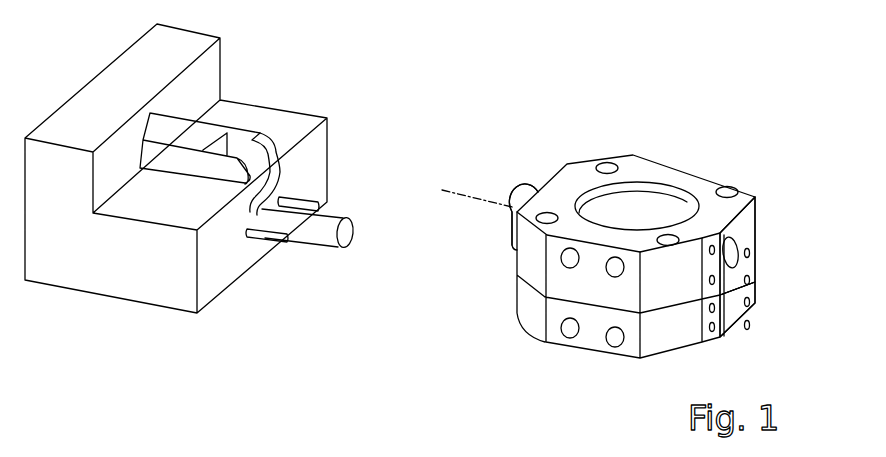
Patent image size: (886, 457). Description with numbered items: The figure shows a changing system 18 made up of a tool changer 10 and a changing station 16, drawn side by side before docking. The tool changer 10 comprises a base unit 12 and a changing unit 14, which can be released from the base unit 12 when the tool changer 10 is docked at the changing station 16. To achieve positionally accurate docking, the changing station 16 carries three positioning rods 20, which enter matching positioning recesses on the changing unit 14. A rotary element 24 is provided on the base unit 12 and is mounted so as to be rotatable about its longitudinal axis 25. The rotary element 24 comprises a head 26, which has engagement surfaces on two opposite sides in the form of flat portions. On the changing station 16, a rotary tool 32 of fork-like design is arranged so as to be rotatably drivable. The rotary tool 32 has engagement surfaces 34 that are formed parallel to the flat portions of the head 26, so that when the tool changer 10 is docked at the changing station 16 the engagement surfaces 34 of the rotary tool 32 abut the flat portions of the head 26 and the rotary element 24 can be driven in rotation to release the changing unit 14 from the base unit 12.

The tool changer 10 is at (589, 362).
The base unit 12 is at (757, 222).
The changing unit 14 is at (757, 283).
The changing station 16 is at (101, 314).
The changing system 18 is at (783, 125).
The positioning rods 20 is at (308, 202).
The rotary element 24 is at (531, 188).
The longitudinal axis 25 is at (453, 192).
The head 26 is at (523, 214).
The rotary tool 32 is at (230, 100).
The engagement surfaces 34 is at (262, 132).